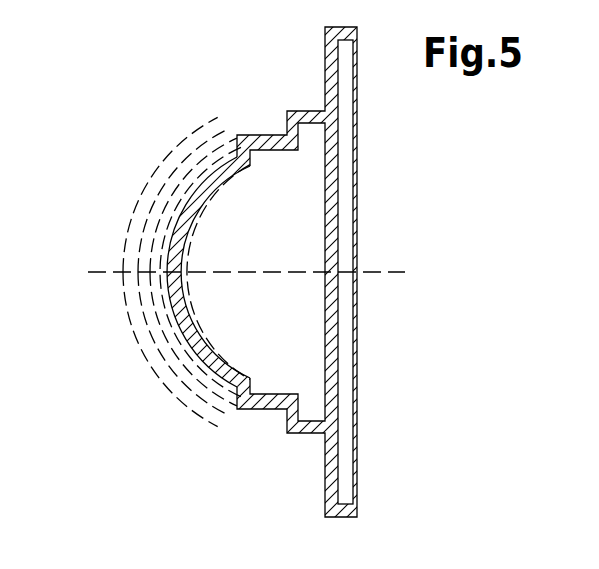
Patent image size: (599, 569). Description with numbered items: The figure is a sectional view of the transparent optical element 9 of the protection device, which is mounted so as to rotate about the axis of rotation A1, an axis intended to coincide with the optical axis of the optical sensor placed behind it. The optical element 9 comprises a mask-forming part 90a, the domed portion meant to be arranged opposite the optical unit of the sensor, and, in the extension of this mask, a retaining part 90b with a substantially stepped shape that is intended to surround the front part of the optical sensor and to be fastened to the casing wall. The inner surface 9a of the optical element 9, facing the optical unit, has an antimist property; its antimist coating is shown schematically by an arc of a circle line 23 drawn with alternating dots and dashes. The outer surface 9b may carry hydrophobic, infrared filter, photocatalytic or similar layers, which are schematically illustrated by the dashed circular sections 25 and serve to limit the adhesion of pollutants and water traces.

The optical element 9 is at (170, 313).
The inner surface 9a is at (200, 197).
The outer surface 9b is at (183, 348).
The arc of a circle line 23 is at (216, 337).
The circular sections 25 is at (151, 285).
The mask-forming part 90a is at (215, 183).
The retaining part 90b is at (257, 437).
The axis of rotation A1 is at (390, 272).